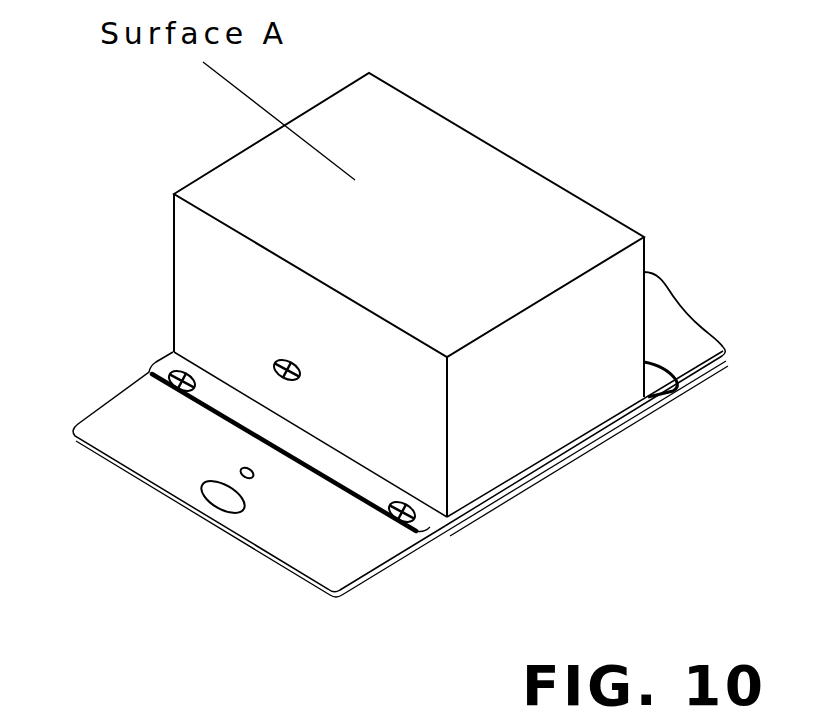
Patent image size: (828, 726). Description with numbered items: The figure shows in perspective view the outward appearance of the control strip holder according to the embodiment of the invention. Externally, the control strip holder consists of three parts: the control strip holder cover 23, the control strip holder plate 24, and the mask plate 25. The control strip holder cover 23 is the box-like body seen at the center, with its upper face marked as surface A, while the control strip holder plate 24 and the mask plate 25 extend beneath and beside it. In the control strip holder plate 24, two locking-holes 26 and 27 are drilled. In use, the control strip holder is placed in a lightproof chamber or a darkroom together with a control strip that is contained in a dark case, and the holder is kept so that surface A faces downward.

The control strip holder cover 23 is at (557, 182).
The control strip holder plate 24 is at (102, 402).
The mask plate 25 is at (597, 440).
The locking-hole 26 is at (225, 495).
The locking-hole 27 is at (258, 478).